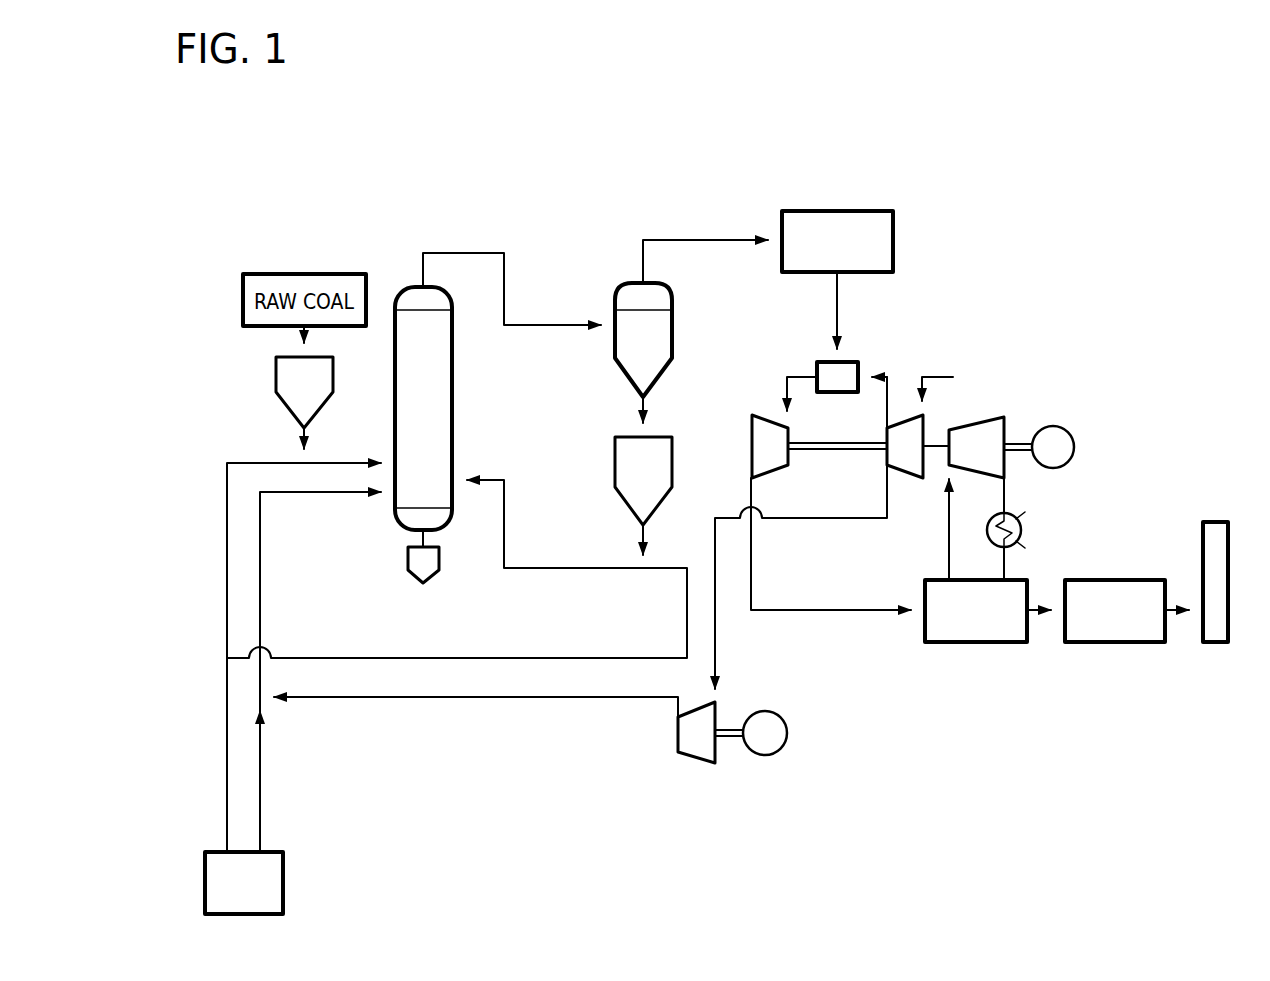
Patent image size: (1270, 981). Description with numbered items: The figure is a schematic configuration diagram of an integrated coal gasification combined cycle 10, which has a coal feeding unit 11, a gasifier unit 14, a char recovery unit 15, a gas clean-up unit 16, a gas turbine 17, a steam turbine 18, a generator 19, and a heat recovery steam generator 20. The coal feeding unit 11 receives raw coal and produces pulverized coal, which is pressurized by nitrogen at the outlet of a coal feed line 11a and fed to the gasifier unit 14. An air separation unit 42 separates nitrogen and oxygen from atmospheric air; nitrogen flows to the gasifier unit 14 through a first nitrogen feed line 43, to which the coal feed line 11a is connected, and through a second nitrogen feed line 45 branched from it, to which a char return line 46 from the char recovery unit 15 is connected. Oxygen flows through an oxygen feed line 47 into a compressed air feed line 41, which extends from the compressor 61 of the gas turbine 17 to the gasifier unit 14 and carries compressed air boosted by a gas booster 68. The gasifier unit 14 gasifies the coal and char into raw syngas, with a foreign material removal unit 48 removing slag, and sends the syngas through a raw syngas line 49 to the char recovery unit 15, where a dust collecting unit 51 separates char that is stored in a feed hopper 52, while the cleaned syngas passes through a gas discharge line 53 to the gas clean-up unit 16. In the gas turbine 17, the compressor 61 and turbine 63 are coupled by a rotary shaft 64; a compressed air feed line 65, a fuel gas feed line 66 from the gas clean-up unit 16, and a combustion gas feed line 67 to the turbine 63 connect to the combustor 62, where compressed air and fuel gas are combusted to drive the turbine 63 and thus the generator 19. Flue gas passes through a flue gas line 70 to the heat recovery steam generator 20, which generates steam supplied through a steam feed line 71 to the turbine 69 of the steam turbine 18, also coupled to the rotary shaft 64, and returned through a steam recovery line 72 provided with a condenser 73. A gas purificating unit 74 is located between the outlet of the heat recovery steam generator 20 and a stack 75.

The integrated coal gasification combined cycle 10 is at (597, 124).
The coal feeding unit 11 is at (262, 370).
The coal feed line 11a is at (300, 430).
The gasifier unit 14 is at (386, 268).
The char recovery unit 15 is at (605, 355).
The gas clean-up unit 16 is at (837, 198).
The gas turbine 17 is at (813, 409).
The steam turbine 18 is at (980, 401).
The generator 19 is at (1078, 414).
The heat recovery steam generator 20 is at (997, 658).
The compressed air feed line 41 is at (468, 699).
The air separation unit 42 is at (203, 880).
The first nitrogen feed line 43 is at (225, 745).
The second nitrogen feed line 45 is at (323, 656).
The char return line 46 is at (640, 538).
The oxygen feed line 47 is at (262, 745).
The foreign material removal unit 48 is at (406, 558).
The raw syngas line 49 is at (464, 252).
The dust collecting unit 51 is at (613, 345).
The feed hopper 52 is at (613, 457).
The gas discharge line 53 is at (688, 239).
The compressor 61 is at (906, 478).
The combustor 62 is at (852, 360).
The turbine 63 is at (750, 429).
The rotary shaft 64 is at (838, 452).
The compressed air feed line 65 is at (890, 395).
The fuel gas feed line 66 is at (835, 293).
The combustion gas feed line 67 is at (797, 375).
The gas booster 68 is at (696, 765).
The turbine 69 is at (991, 415).
The flue gas line 70 is at (834, 612).
The steam feed line 71 is at (947, 565).
The steam recovery line 72 is at (1006, 565).
The condenser 73 is at (1016, 514).
The gas purificating unit 74 is at (1114, 578).
The stack 75 is at (1217, 520).